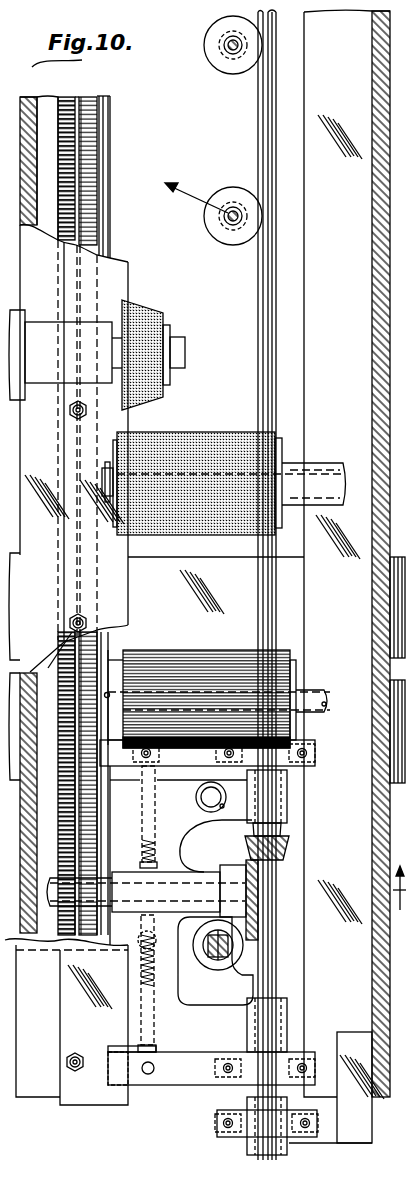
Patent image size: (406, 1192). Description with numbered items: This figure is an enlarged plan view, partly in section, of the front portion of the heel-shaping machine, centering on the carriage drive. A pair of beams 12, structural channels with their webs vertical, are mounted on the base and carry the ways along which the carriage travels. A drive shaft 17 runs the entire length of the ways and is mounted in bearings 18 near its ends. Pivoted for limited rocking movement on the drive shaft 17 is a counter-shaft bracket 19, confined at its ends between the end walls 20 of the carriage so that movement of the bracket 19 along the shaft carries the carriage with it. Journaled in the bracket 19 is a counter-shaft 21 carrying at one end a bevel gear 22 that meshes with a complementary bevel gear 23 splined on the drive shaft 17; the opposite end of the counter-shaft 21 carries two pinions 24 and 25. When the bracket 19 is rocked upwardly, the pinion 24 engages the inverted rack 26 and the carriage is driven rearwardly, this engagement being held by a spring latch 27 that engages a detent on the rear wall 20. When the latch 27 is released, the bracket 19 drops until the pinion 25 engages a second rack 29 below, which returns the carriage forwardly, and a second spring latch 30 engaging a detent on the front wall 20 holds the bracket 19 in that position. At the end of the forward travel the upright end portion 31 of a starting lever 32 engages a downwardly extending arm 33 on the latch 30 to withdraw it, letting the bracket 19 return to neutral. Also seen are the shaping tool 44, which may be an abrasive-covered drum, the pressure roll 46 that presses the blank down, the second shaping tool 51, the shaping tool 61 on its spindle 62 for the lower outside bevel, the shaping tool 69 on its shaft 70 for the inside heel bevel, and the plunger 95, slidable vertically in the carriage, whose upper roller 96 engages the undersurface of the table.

The beams 12 is at (399, 893).
The drive shaft 17 is at (274, 943).
The bearings 18 is at (253, 1128).
The counter-shaft bracket 19 is at (172, 982).
The end walls 20 is at (200, 762).
The counter-shaft 21 is at (191, 878).
The bevel gear 22 is at (252, 948).
The bevel gear 23 is at (276, 855).
The pinion 24 is at (92, 912).
The pinion 25 is at (64, 912).
The inverted rack 26 is at (96, 822).
The spring latch 27 is at (151, 806).
The second rack 29 is at (66, 766).
The second spring latch 30 is at (156, 1048).
The upright end portion 31 is at (120, 950).
The starting lever 32 is at (138, 946).
The downwardly extending arm 33 is at (152, 929).
The shaping tool 44 is at (200, 441).
The pressure roll 46 is at (186, 661).
The second shaping tool 51 is at (157, 313).
The shaping tool 61 is at (216, 234).
The spindle 62 is at (235, 207).
The shaping tool 69 is at (231, 67).
The shaft 70 is at (225, 42).
The plunger 95 is at (220, 960).
The roller 96 is at (208, 946).